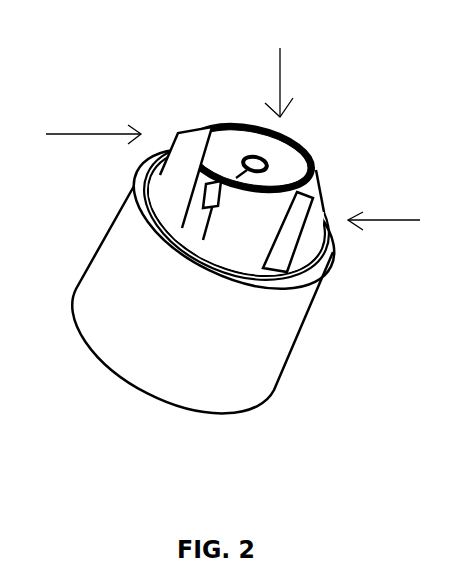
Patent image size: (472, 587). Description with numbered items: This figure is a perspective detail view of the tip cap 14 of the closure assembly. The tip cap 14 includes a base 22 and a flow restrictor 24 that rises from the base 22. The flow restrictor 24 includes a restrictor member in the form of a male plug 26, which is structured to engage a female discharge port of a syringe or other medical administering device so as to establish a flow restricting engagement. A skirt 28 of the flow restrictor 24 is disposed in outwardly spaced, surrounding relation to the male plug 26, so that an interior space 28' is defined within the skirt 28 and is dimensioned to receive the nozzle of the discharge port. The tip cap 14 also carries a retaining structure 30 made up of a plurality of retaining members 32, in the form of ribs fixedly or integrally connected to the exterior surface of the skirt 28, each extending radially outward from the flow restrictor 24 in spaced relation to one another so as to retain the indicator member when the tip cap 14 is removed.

The tip cap 14 is at (401, 223).
The base 22 is at (293, 345).
The flow restrictor 24 is at (280, 69).
The male plug 26 is at (268, 164).
The skirt 28 is at (236, 150).
The interior space 28' is at (299, 149).
The retaining structure 30 is at (78, 135).
The retaining member 32 is at (180, 131).